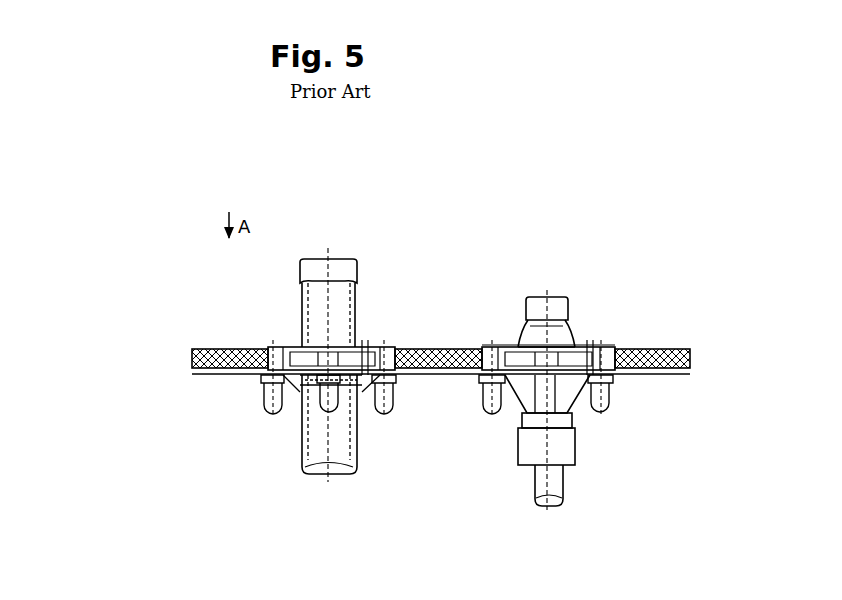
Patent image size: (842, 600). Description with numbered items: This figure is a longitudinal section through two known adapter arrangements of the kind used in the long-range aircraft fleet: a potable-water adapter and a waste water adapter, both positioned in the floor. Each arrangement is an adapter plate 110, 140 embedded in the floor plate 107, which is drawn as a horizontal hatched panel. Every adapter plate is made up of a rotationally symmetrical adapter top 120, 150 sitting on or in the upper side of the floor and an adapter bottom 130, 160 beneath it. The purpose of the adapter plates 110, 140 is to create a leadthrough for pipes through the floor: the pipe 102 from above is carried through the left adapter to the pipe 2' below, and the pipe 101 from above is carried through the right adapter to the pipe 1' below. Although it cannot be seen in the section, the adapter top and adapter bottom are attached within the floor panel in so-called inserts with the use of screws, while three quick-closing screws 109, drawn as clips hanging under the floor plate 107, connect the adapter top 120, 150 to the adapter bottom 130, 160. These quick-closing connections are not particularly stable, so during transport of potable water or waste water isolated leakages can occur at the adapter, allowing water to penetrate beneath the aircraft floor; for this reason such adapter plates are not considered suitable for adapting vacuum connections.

The adapter plate 110 is at (376, 204).
The adapter plate 140 is at (505, 209).
The pipe 102 is at (326, 255).
The pipe 101 is at (549, 284).
The adapter top 120 is at (297, 313).
The floor plate 107 is at (364, 344).
The adapter top 150 is at (574, 318).
The adapter bottom 130 is at (300, 389).
The quick-closing screws 109 is at (487, 396).
The adapter bottom 160 is at (575, 412).
The pipe 2' is at (278, 449).
The pipe 1' is at (575, 494).